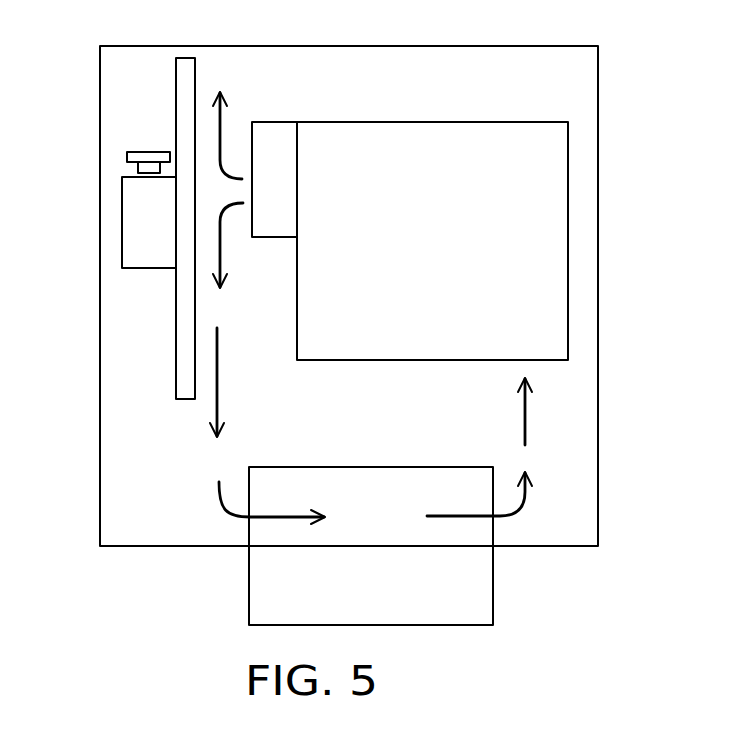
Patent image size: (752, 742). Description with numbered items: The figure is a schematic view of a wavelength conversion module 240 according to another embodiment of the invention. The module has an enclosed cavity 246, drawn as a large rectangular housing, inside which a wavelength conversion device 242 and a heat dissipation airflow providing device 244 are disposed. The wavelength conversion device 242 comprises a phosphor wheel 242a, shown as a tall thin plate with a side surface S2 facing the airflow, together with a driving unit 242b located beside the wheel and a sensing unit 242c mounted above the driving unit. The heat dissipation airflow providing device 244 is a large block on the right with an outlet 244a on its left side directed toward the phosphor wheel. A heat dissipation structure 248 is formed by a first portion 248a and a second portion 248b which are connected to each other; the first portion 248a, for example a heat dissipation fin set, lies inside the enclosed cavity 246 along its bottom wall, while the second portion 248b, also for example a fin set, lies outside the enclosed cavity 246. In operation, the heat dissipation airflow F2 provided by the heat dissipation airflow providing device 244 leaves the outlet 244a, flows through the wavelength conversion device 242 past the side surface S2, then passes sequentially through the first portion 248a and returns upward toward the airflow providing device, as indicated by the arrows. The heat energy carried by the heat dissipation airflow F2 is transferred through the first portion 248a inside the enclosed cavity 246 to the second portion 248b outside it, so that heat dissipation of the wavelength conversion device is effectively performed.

The wavelength conversion module 240 is at (704, 40).
The wavelength conversion device 242 is at (208, 81).
The phosphor wheel 242a is at (180, 80).
The driving unit 242b is at (131, 227).
The sensing unit 242c is at (150, 152).
The heat dissipation airflow providing device 244 is at (557, 277).
The outlet 244a is at (253, 152).
The enclosed cavity 246 is at (598, 423).
The heat dissipation structure 248 is at (451, 552).
The first portion 248a is at (482, 530).
The second portion 248b is at (477, 595).
The side surface S2 is at (207, 306).
The heat dissipation airflow F2 is at (220, 510).